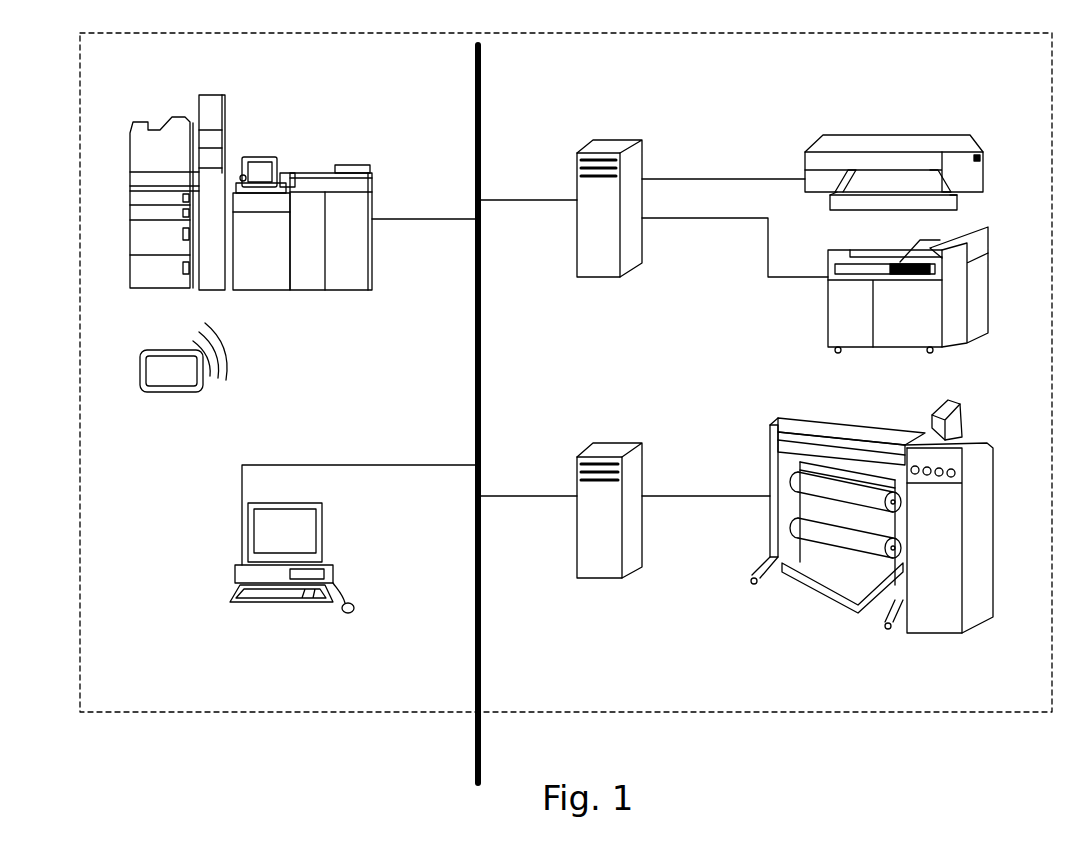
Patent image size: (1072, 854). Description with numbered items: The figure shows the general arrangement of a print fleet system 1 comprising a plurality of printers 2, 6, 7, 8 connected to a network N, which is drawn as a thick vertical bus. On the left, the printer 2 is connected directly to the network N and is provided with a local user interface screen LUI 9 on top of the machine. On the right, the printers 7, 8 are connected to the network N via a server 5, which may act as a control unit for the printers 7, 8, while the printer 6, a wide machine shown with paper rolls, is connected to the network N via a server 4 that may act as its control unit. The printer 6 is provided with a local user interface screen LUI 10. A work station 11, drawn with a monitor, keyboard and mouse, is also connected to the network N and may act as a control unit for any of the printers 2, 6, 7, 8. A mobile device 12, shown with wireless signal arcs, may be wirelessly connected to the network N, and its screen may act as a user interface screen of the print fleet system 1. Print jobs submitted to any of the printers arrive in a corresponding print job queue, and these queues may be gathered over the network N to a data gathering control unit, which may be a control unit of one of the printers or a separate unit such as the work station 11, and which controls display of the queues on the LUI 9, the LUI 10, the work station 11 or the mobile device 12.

The print fleet system 1 is at (882, 33).
The network N is at (482, 84).
The printer 2 is at (347, 283).
The local user interface screen LUI 9 is at (265, 156).
The mobile device 12 is at (155, 392).
The work station 11 is at (332, 580).
The server 5 is at (580, 277).
The server 4 is at (600, 578).
The printer 8 is at (805, 160).
The printer 7 is at (827, 296).
The printer 6 is at (766, 462).
The local user interface screen LUI 10 is at (950, 398).